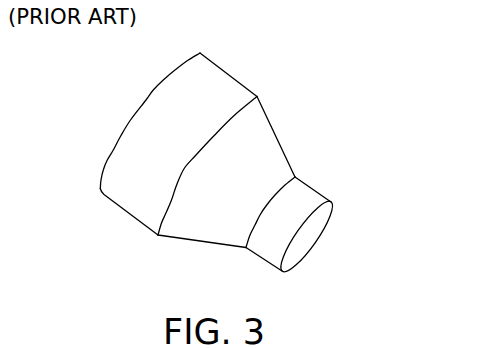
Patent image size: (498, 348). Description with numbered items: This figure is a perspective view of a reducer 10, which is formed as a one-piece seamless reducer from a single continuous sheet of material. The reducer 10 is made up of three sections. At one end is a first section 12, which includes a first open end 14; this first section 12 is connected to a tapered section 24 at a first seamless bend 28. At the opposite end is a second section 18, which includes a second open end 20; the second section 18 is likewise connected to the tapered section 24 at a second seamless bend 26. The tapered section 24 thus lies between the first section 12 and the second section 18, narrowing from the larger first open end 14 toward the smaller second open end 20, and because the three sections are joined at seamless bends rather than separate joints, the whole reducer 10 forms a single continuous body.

The reducer 10 is at (211, 153).
The first section 12 is at (104, 121).
The first open end 14 is at (156, 117).
The second section 18 is at (325, 221).
The second open end 20 is at (336, 251).
The tapered section 24 is at (271, 172).
The second seamless bend 26 is at (259, 217).
The first seamless bend 28 is at (184, 166).